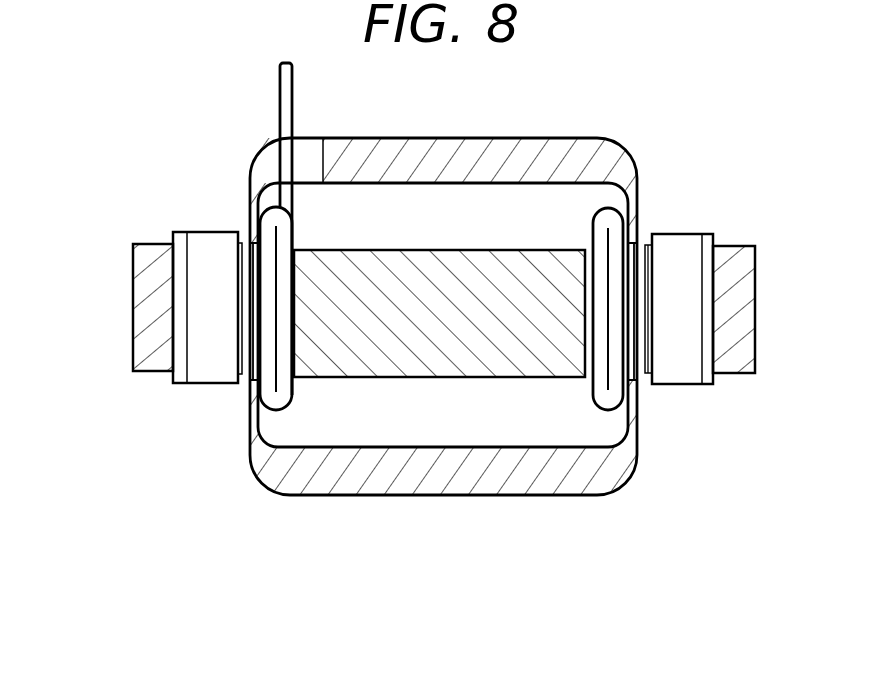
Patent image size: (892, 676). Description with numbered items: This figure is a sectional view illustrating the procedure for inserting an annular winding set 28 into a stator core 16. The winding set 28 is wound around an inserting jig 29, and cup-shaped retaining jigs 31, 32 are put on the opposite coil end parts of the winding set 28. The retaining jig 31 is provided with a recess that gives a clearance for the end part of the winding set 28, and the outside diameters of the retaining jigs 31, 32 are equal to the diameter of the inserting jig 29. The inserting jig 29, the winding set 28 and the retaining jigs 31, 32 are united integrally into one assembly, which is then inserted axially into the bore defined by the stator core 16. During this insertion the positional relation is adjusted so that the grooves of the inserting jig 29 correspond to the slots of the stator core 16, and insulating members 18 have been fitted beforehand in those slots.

The stator core 16 is at (732, 246).
The insulating members 18 is at (678, 233).
The winding set 28 is at (592, 395).
The inserting jig 29 is at (443, 268).
The retaining jig 31 is at (610, 137).
The retaining jig 32 is at (567, 495).